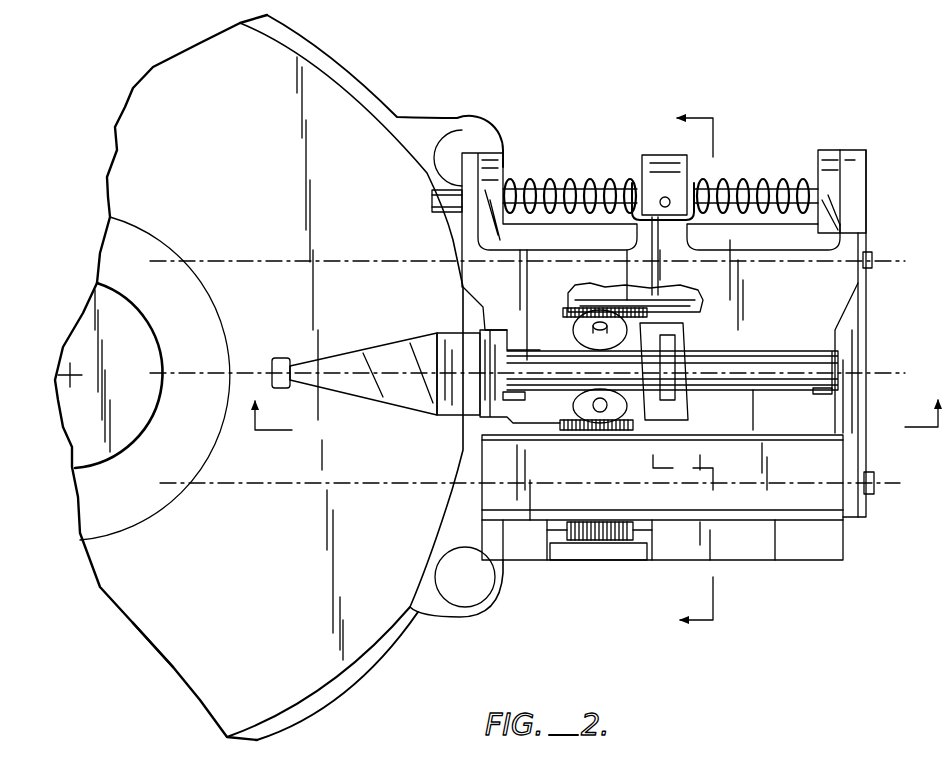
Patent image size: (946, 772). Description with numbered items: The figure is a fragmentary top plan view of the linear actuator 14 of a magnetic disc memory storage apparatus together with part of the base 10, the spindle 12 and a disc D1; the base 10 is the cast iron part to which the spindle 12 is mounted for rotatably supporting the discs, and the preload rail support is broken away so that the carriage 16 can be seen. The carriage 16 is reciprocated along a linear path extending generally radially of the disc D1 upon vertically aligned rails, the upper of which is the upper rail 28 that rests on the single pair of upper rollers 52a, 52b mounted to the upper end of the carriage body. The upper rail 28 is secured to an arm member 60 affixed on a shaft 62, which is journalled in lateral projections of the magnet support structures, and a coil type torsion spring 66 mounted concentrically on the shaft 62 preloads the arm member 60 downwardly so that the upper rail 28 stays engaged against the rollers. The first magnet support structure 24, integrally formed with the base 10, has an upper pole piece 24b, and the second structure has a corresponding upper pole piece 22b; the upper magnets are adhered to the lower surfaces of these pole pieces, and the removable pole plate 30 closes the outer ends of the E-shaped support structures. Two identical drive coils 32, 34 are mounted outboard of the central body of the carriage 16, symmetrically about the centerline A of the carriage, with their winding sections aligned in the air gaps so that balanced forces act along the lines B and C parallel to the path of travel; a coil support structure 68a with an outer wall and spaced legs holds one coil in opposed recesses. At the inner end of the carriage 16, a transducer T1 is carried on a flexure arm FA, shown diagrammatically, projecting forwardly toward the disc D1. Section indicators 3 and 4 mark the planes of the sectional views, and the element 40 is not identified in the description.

The base 10 is at (353, 69).
The spindle 12 is at (73, 418).
The linear actuator 14 is at (560, 169).
The carriage 16 is at (692, 406).
The upper pole piece 22b is at (827, 241).
The first magnet support structure 24 is at (481, 462).
The upper pole piece 24b is at (830, 466).
The upper rail 28 is at (827, 379).
The pole plate 30 is at (868, 448).
The drive coil 32 is at (593, 538).
The drive coil 34 is at (694, 313).
The clip 40 is at (868, 493).
The upper roller 52a is at (590, 424).
The upper roller 52b is at (587, 322).
The arm member 60 is at (840, 288).
The shaft 62 is at (720, 187).
The torsion spring 66 is at (765, 182).
The coil support structure 68a is at (603, 565).
The transducer T1 is at (278, 358).
The flexure arm FA is at (383, 353).
The disc D1 is at (170, 671).
The centerline A— A is at (517, 374).
The line B— B is at (522, 482).
The line C— C is at (516, 262).
The section 3- 3 is at (683, 372).
The section 4- 4 is at (597, 404).